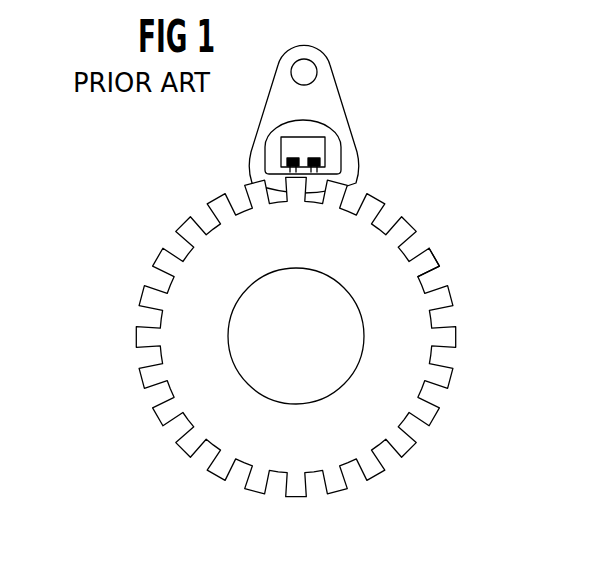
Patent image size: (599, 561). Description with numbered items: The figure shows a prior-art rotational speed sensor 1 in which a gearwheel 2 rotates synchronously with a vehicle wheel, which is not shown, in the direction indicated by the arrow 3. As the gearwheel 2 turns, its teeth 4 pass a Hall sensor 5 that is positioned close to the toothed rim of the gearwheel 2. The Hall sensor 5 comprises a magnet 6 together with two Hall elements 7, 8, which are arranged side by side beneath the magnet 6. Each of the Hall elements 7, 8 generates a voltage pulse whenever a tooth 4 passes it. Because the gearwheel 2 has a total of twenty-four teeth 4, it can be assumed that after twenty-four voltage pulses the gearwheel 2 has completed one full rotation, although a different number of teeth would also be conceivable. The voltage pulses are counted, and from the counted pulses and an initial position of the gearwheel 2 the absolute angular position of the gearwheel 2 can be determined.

The rotational speed sensor 1 is at (427, 92).
The gearwheel 2 is at (422, 326).
The arrow 3 is at (220, 258).
The teeth 4 is at (428, 265).
The Hall sensor 5 is at (273, 148).
The magnet 6 is at (305, 137).
The Hall element 7 is at (287, 163).
The Hall element 8 is at (320, 161).